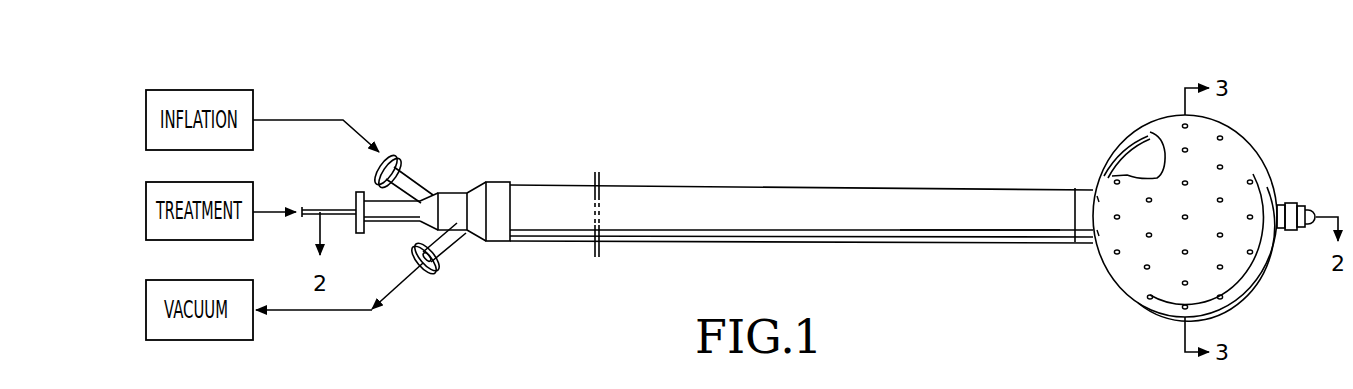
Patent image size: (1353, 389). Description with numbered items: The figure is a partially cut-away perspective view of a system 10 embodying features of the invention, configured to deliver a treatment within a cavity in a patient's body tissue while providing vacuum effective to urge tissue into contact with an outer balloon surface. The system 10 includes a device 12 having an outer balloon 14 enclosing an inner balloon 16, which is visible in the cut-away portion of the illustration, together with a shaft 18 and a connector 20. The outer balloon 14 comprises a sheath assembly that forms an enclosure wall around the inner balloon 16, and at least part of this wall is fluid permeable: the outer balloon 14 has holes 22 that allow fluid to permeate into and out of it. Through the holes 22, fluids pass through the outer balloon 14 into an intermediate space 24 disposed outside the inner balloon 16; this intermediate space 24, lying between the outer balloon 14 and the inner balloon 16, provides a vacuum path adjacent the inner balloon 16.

The system 10 is at (855, 110).
The device 12 is at (741, 167).
The outer balloon 14 is at (1257, 172).
The inner balloon 16 is at (1137, 135).
The shaft 18 is at (976, 190).
The connector 20 is at (452, 192).
The holes 22 is at (1222, 165).
The intermediate space 24 is at (1112, 158).